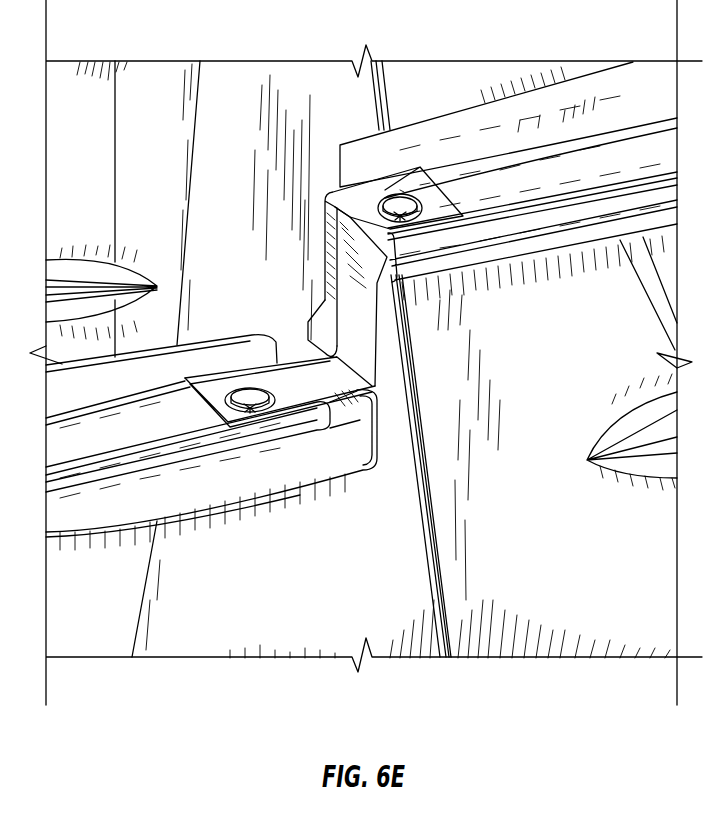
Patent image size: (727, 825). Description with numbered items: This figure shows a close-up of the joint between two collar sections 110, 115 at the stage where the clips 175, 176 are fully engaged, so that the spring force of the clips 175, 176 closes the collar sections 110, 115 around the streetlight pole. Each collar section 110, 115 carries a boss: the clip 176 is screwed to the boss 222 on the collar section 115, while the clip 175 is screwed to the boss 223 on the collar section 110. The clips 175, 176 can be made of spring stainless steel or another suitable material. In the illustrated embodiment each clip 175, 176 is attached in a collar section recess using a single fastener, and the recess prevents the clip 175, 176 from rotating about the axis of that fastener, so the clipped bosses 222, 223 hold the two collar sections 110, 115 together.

The collar section 110 is at (354, 580).
The collar section 115 is at (556, 568).
The clip 175 is at (324, 297).
The clip 176 is at (335, 224).
The boss 222 is at (594, 117).
The boss 223 is at (108, 393).